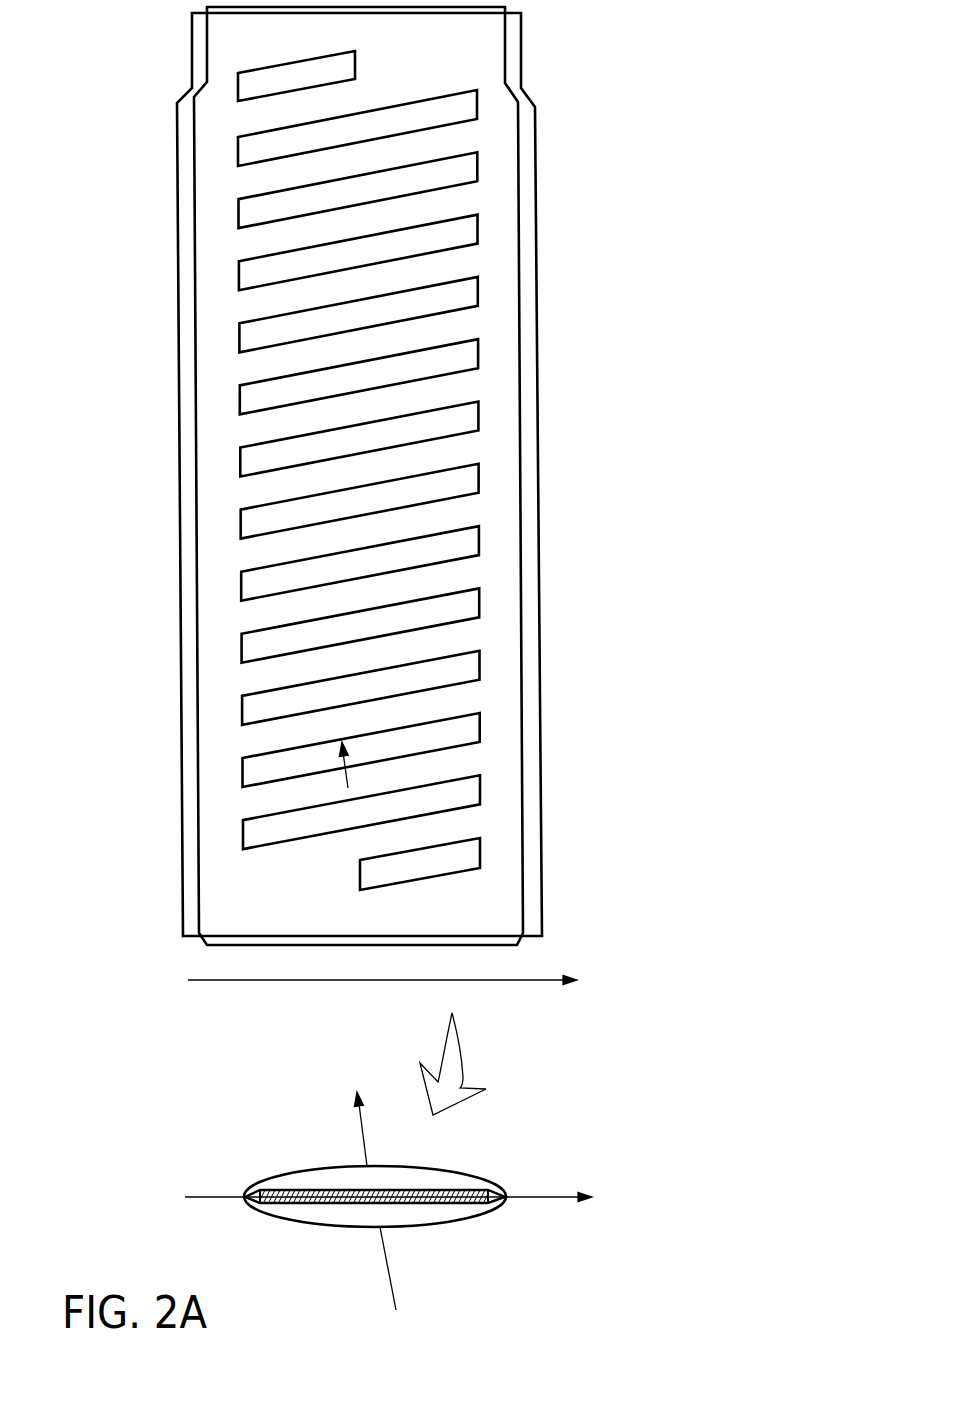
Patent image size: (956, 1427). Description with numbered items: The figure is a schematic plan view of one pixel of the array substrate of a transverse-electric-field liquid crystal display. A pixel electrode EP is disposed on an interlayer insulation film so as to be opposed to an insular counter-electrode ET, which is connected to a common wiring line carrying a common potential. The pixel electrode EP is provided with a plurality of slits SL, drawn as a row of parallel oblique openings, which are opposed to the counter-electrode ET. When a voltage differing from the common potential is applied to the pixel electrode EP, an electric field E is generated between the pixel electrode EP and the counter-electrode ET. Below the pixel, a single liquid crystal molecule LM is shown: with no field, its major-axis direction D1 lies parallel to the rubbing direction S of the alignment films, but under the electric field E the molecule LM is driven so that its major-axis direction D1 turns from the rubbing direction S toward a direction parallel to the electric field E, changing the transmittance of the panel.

The counter-electrode ET is at (522, 50).
The pixel electrode EP is at (518, 118).
The slit SL is at (456, 234).
The electric field E is at (345, 777).
The rubbing direction S is at (401, 1089).
The major-axis direction D1 is at (325, 1205).
The liquid crystal molecule LM is at (455, 1220).